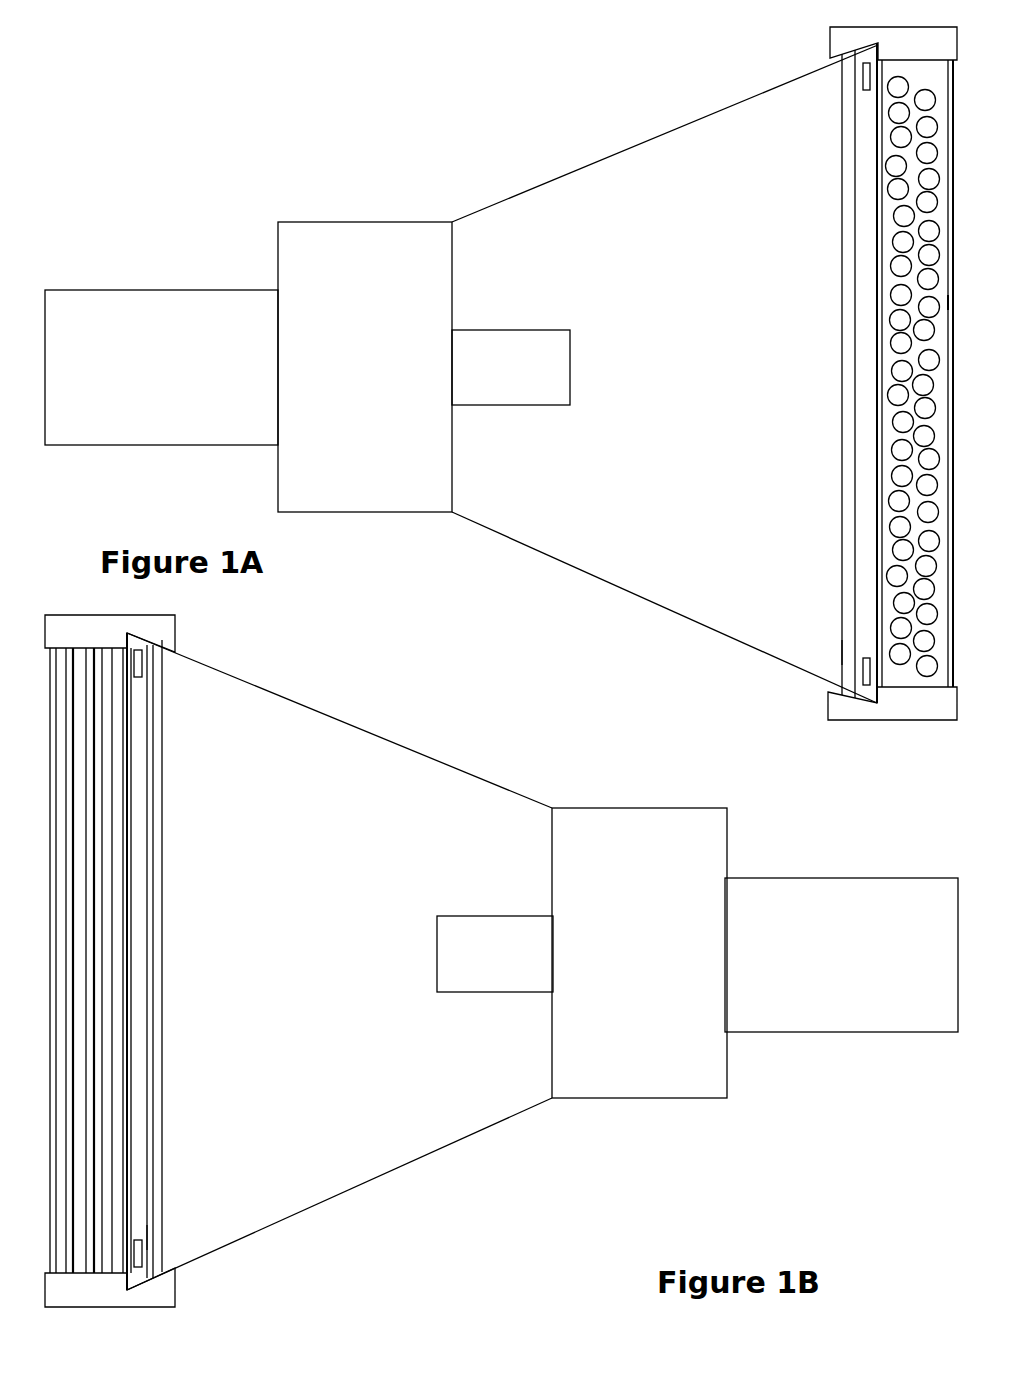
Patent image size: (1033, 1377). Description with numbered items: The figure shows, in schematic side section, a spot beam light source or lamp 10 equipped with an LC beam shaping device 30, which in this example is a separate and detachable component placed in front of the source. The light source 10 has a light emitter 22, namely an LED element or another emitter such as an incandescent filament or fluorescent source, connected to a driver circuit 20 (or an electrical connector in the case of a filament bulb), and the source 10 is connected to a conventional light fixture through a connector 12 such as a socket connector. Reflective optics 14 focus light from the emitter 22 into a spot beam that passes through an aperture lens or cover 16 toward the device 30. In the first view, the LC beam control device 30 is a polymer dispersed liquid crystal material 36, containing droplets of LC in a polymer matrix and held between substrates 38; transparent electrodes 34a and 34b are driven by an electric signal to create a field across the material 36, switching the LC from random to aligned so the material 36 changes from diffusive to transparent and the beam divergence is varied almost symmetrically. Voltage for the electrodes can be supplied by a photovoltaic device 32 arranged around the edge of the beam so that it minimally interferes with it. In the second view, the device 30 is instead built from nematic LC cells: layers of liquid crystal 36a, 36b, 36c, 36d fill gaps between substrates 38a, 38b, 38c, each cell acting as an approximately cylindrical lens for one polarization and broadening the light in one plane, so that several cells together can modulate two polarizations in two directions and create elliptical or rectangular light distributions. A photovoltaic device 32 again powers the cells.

In FIG. 1A, the spot beam light source 10 is at (403, 183).
In FIG. 1A, the connector 12 is at (235, 296).
In FIG. 1B, the connector 12 is at (841, 955).
In FIG. 1A, the reflective optics 14 is at (598, 578).
In FIG. 1B, the reflective optics 14 is at (405, 1160).
In FIG. 1A, the aperture lens or cover 16 is at (850, 652).
In FIG. 1B, the aperture lens or cover 16 is at (158, 1237).
In FIG. 1A, the driver circuit 20 is at (325, 222).
In FIG. 1B, the driver circuit 20 is at (639, 953).
In FIG. 1A, the light emitter 22 is at (540, 330).
In FIG. 1B, the light emitter 22 is at (495, 954).
In FIG. 1A, the LC beam shaping device 30 is at (838, 31).
In FIG. 1B, the LC beam shaping device 30 is at (110, 961).
In FIG. 1A, the photovoltaic device 32 is at (866, 90).
In FIG. 1B, the photovoltaic device 32 is at (140, 677).
In FIG. 1A, the transparent electrode 34a is at (890, 274).
In FIG. 1A, the transparent electrode 34b is at (948, 302).
In FIG. 1A, the polymer dispersed liquid crystal material 36 is at (885, 380).
In FIG. 1B, the liquid crystal 36a is at (118, 963).
In FIG. 1B, the liquid crystal 36b is at (98, 992).
In FIG. 1B, the liquid crystal 36c is at (82, 1028).
In FIG. 1B, the liquid crystal 36d is at (62, 1060).
In FIG. 1A, the substrates 38 is at (948, 258).
In FIG. 1B, the substrate 38a is at (125, 767).
In FIG. 1B, the substrate 38b is at (105, 808).
In FIG. 1B, the substrate 38c is at (87, 892).